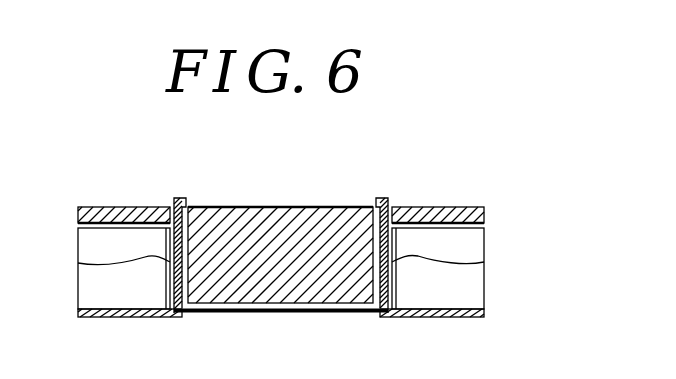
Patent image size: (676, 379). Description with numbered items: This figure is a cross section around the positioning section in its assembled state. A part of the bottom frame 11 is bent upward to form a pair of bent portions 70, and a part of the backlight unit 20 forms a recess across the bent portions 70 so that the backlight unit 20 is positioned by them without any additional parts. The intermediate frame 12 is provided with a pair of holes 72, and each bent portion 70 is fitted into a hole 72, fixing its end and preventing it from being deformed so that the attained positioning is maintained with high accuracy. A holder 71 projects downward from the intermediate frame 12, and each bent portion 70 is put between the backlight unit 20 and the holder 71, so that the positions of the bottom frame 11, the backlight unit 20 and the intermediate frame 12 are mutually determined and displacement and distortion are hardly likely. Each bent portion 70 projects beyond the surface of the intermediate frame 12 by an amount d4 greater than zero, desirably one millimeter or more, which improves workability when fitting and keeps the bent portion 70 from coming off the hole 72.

The bottom frame 11 is at (143, 317).
The intermediate frame 12 is at (131, 207).
The backlight unit 20 is at (88, 289).
The bent portion 70 is at (78, 263).
The holder 71 is at (336, 298).
The hole 72 is at (170, 207).
The projected amount of the bent portion d4 is at (198, 225).